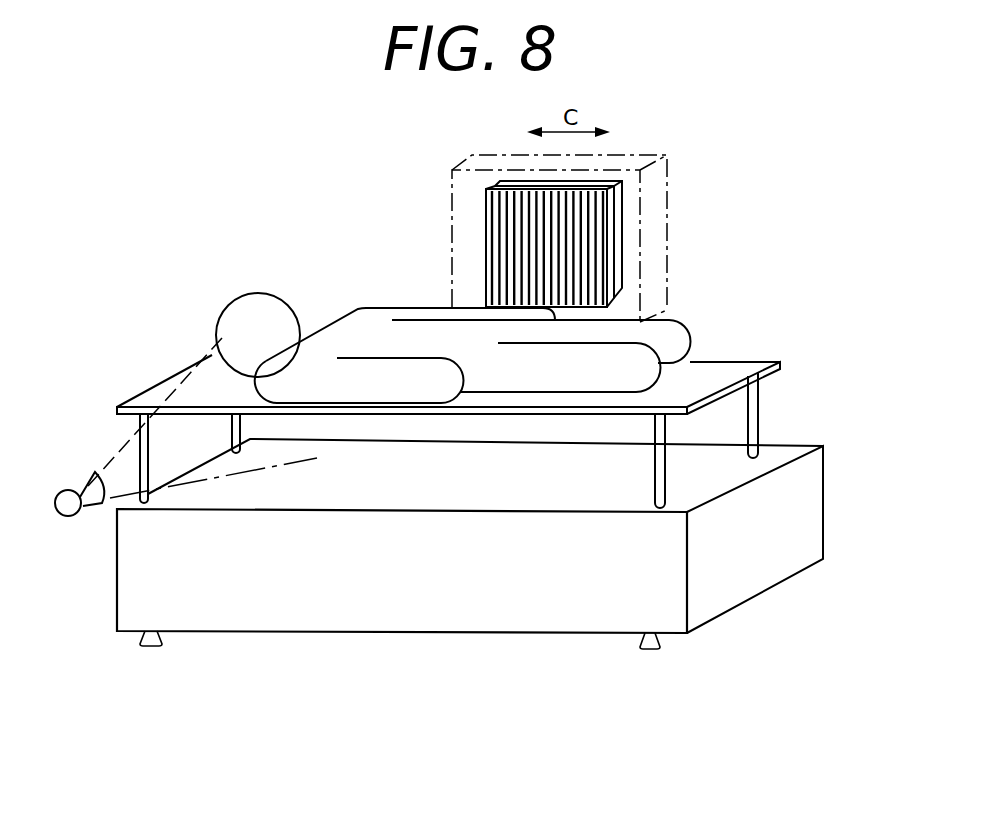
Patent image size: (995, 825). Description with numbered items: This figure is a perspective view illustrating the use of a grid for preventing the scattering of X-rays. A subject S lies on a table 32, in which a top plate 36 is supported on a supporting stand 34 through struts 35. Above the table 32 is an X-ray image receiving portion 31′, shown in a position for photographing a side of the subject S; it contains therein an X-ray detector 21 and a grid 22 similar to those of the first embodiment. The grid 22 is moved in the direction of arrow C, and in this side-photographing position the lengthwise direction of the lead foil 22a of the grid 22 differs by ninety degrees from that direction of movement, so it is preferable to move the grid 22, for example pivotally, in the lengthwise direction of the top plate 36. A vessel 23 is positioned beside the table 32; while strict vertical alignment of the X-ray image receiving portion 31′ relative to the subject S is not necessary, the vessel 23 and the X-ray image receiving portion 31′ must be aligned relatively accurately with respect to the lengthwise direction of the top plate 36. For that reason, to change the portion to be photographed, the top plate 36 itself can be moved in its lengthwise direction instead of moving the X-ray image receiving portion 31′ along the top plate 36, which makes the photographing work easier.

The X-ray detector 21 is at (628, 198).
The grid 22 is at (552, 246).
The lead foil 22a is at (495, 239).
The vessel 23 is at (64, 494).
The X-ray image receiving portion 31′ is at (655, 225).
The table 32 is at (483, 406).
The supporting stand 34 is at (811, 490).
The struts 35 is at (757, 417).
The top plate 36 is at (728, 362).
The subject S is at (347, 323).